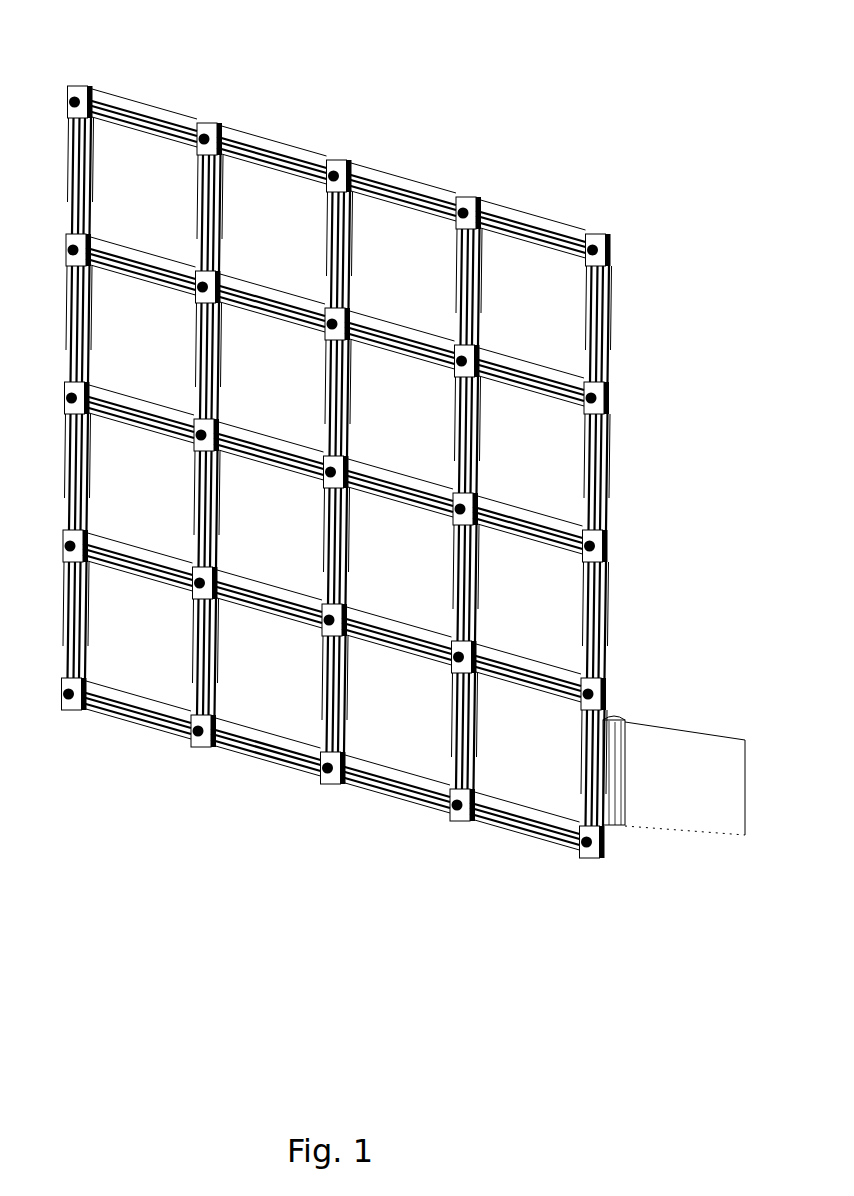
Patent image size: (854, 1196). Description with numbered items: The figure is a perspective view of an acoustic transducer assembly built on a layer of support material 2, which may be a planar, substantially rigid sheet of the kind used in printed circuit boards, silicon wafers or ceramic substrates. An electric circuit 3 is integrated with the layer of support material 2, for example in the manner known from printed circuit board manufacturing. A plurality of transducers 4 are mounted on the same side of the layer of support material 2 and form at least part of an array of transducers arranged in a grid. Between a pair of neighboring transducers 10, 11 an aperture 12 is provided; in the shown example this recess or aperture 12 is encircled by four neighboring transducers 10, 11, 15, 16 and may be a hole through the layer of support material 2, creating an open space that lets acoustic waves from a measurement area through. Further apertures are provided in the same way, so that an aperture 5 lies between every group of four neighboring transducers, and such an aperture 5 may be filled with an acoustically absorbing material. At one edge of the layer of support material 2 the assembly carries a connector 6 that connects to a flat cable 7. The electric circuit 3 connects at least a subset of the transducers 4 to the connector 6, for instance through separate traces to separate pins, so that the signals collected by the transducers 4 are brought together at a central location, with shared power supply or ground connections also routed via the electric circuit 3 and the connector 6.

The layer of support material 2 is at (135, 100).
The electric circuit 3 is at (285, 155).
The transducers 4 is at (463, 196).
The aperture 5 is at (525, 266).
The connector 6 is at (617, 717).
The flat cable 7 is at (681, 740).
The transducer 10 is at (208, 432).
The transducer 11 is at (322, 326).
The aperture 12 is at (310, 388).
The transducer 15 is at (331, 458).
The transducer 16 is at (217, 288).